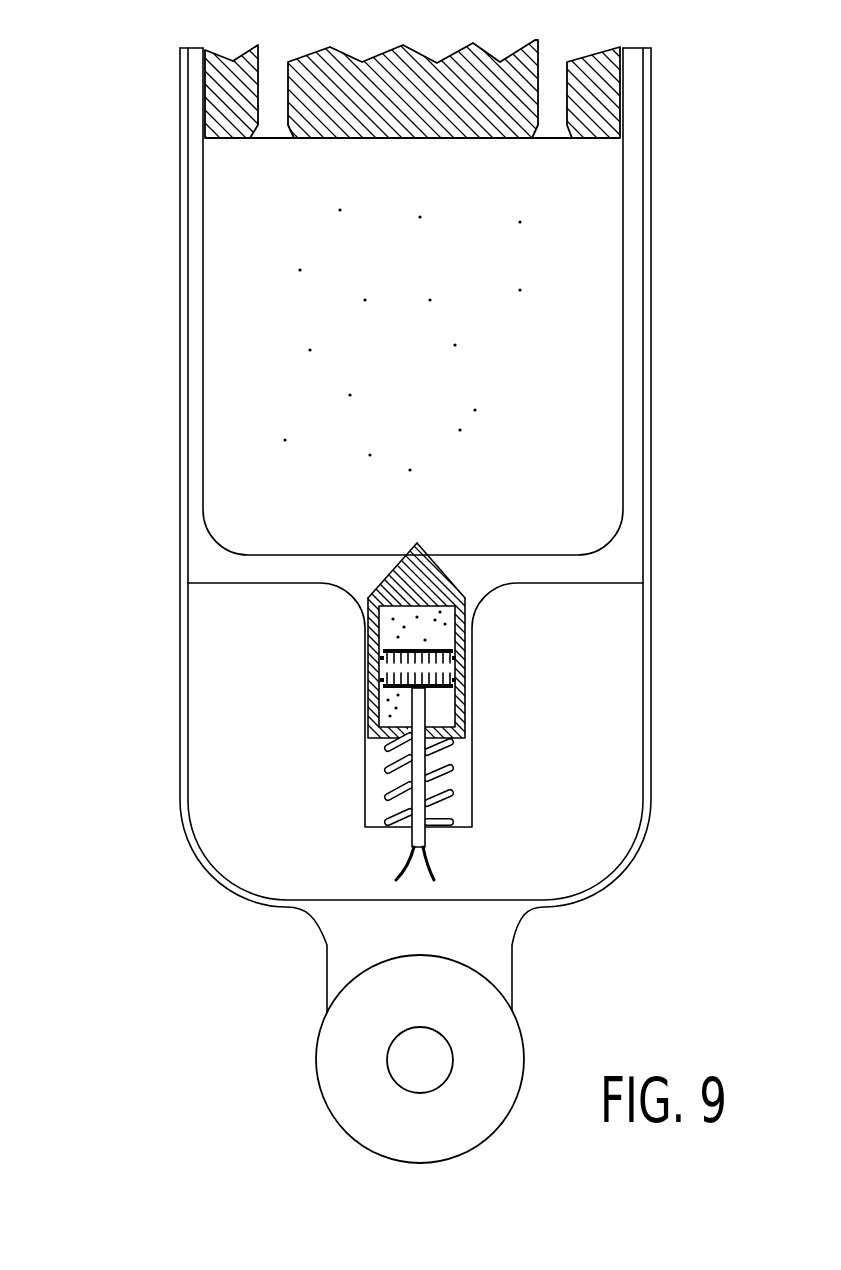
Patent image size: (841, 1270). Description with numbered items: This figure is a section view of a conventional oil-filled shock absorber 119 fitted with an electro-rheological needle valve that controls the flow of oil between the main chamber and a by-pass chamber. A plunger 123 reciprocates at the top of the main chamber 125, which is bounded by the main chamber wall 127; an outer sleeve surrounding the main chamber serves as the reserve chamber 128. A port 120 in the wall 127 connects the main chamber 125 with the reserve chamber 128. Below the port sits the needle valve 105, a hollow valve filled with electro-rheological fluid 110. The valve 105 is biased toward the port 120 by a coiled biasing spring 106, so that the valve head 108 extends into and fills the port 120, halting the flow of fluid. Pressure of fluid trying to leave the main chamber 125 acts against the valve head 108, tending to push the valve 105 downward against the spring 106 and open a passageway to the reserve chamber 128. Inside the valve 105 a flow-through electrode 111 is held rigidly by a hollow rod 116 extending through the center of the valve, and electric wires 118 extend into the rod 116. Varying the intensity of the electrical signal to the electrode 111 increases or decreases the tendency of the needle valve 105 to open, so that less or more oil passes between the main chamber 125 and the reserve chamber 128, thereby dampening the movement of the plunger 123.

The needle valve 105 is at (370, 628).
The biasing spring 106 is at (450, 770).
The valve head 108 is at (450, 572).
The electro-rheological fluid 110 is at (425, 628).
The flow-through electrode 111 is at (455, 680).
The hollow rod 116 is at (410, 774).
The electric wires 118 is at (422, 862).
The oil-filled shock absorber 119 is at (317, 1072).
The port 120 is at (432, 562).
The plunger 123 is at (596, 122).
The main chamber 125 is at (440, 378).
The main chamber wall 127 is at (627, 420).
The reserve chamber 128 is at (195, 407).